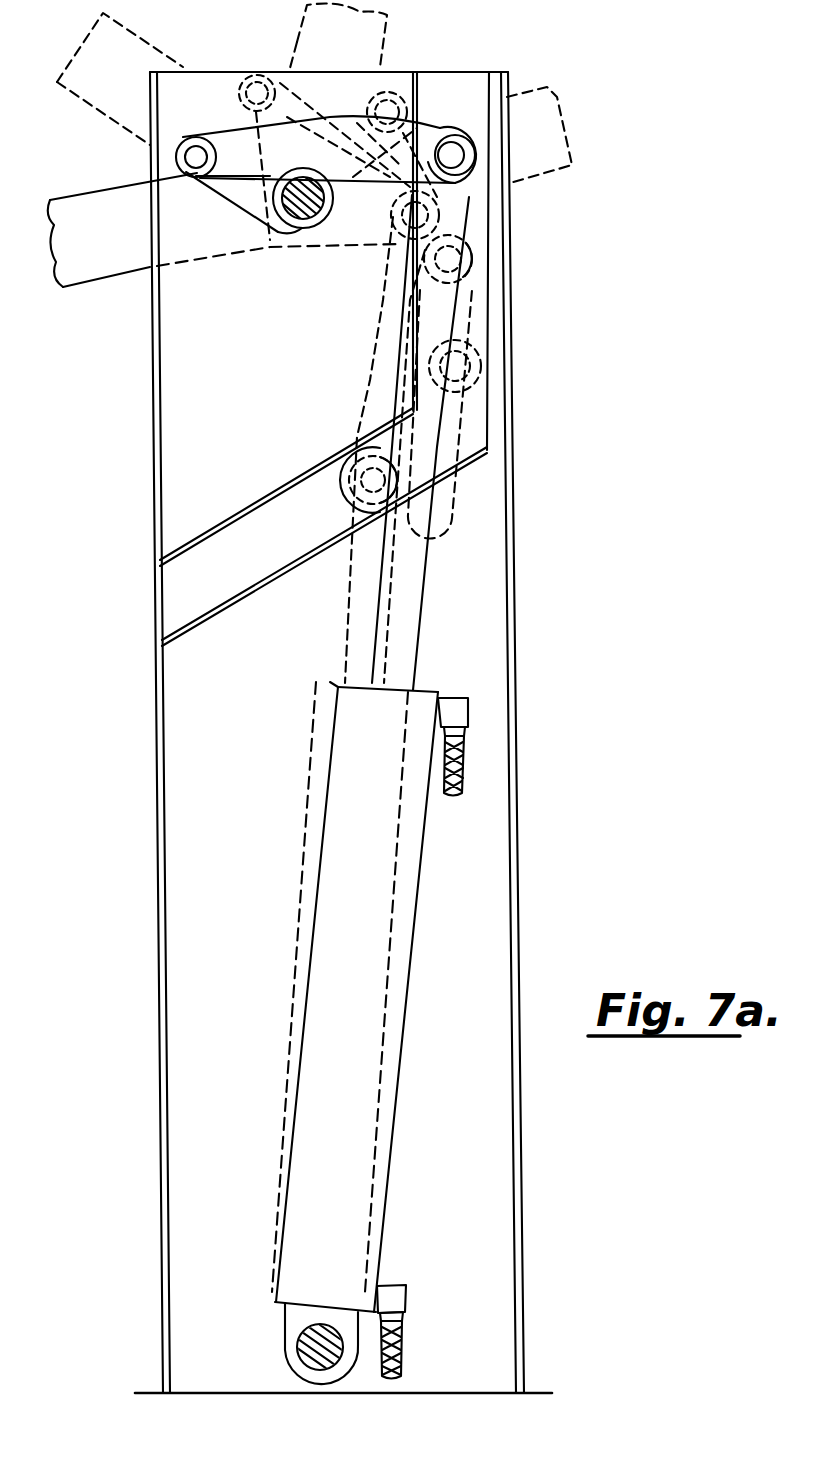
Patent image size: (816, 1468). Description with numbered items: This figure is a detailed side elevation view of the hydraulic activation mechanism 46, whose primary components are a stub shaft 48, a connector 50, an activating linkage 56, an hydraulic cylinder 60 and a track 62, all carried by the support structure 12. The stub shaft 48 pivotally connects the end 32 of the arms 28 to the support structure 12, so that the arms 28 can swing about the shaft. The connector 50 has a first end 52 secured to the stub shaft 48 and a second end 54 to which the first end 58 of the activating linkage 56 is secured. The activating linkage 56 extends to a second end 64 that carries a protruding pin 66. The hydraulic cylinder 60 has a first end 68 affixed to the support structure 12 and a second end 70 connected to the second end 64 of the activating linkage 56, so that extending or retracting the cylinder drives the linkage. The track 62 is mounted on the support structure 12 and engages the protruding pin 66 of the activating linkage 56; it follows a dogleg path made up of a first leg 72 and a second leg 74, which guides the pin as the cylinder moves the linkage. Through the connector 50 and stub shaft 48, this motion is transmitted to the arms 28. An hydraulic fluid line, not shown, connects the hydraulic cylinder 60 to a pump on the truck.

The support structure 12 is at (563, 623).
The arms 28 is at (93, 193).
The end of arms 32 is at (262, 258).
The hydraulic activation mechanism 46 is at (438, 1240).
The stub shaft 48 is at (307, 212).
The connector 50 is at (237, 205).
The first end of connector 52 is at (270, 231).
The second end of connector 54 is at (203, 180).
The activating linkage 56 is at (323, 110).
The first end of activating linkage 58 is at (220, 133).
The hydraulic cylinder 60 is at (420, 897).
The track 62 is at (490, 323).
The second end of activating linkage 64 is at (457, 133).
The protruding pin 66 is at (480, 133).
The first end of hydraulic cylinder 68 is at (283, 1348).
The second end of hydraulic cylinder 70 is at (465, 198).
The first leg 72 is at (477, 307).
The second leg 74 is at (313, 510).